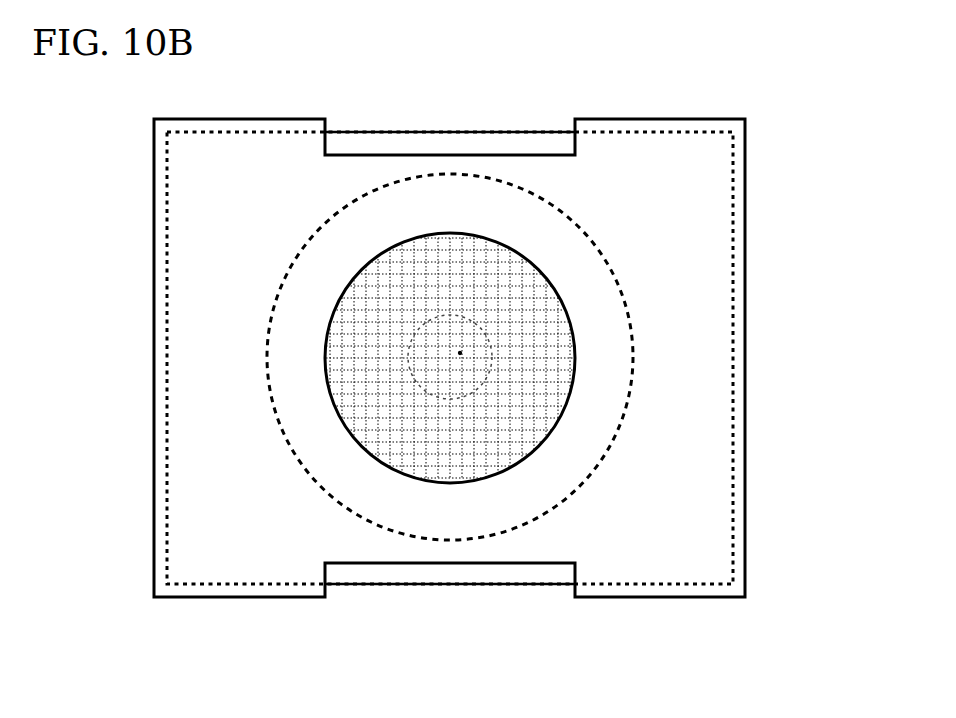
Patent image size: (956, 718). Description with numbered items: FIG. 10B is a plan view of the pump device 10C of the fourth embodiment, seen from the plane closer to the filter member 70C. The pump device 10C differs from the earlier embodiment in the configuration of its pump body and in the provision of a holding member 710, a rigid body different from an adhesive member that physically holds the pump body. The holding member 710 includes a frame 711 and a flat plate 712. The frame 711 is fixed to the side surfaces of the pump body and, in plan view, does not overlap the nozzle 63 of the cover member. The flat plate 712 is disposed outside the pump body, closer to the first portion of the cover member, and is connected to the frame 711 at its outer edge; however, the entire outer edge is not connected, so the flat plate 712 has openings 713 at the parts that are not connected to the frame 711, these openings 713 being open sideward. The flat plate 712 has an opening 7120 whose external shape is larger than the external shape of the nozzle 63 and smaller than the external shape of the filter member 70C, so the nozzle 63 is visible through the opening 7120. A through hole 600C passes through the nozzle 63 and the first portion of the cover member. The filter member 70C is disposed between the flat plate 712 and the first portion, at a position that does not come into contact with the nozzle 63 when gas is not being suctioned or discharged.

The pump device 10C is at (698, 83).
The holding member 710 is at (245, 640).
The frame 711 is at (165, 568).
The flat plate 712 is at (223, 572).
The openings 713 is at (450, 150).
The filter member 70C is at (552, 322).
The opening 7120 is at (353, 406).
The nozzle 63 is at (487, 369).
The through hole 600C is at (460, 353).